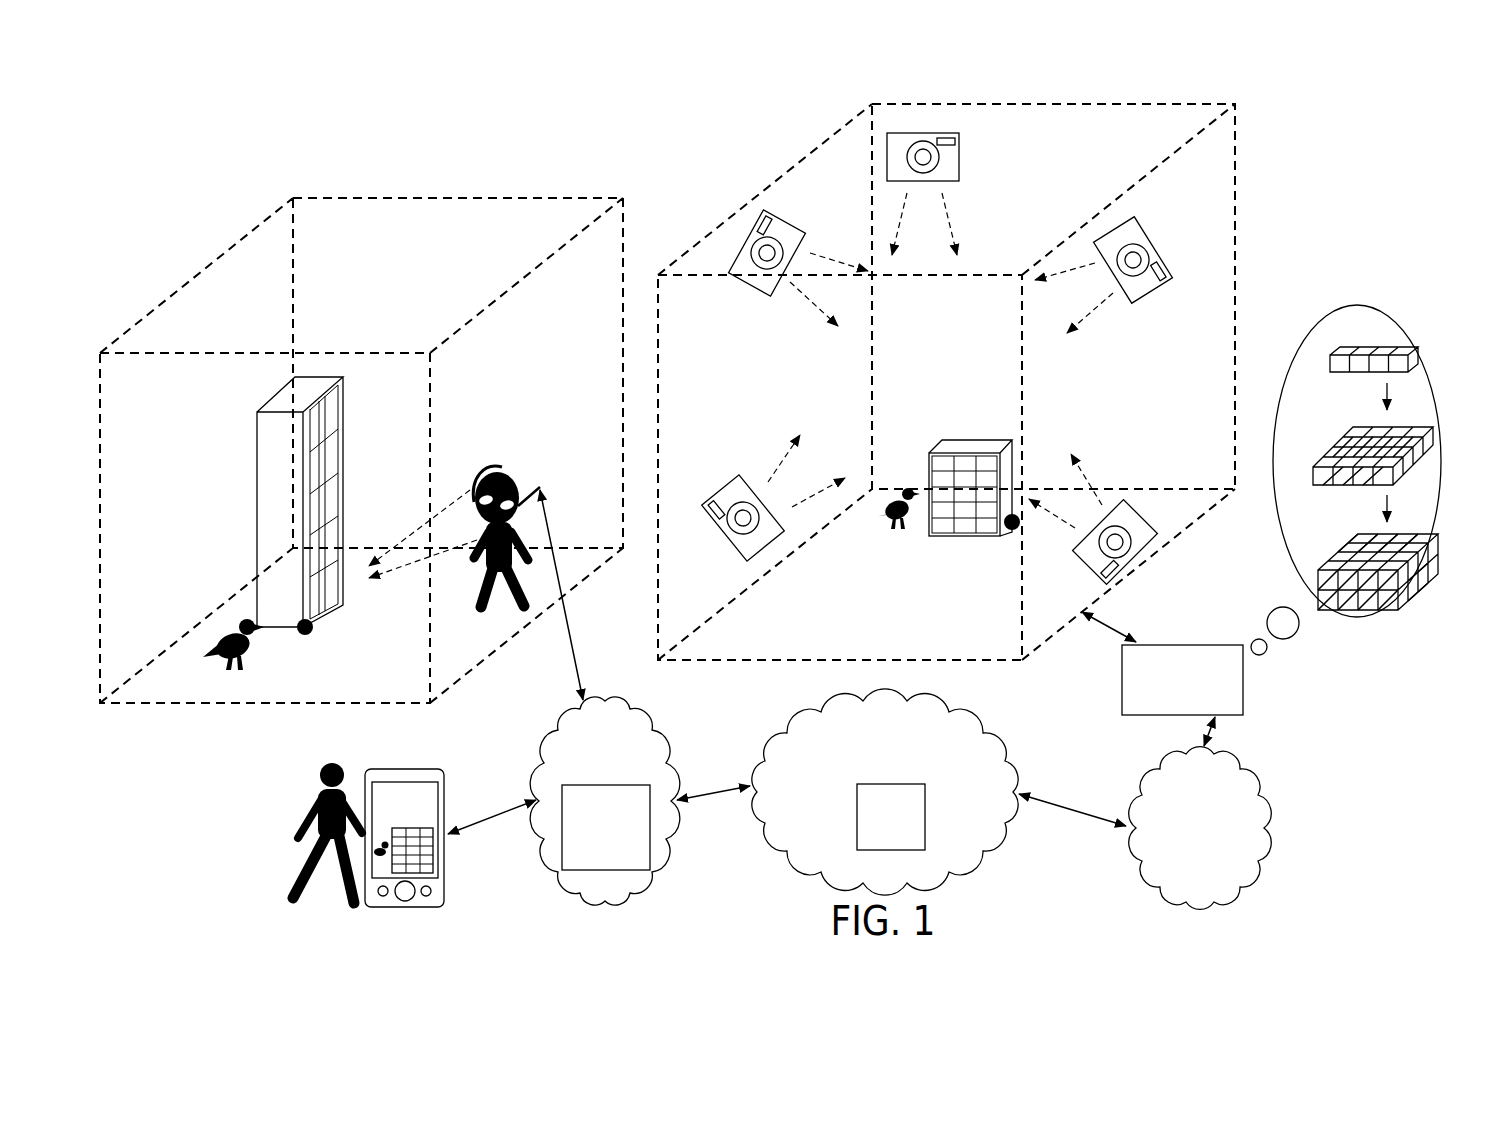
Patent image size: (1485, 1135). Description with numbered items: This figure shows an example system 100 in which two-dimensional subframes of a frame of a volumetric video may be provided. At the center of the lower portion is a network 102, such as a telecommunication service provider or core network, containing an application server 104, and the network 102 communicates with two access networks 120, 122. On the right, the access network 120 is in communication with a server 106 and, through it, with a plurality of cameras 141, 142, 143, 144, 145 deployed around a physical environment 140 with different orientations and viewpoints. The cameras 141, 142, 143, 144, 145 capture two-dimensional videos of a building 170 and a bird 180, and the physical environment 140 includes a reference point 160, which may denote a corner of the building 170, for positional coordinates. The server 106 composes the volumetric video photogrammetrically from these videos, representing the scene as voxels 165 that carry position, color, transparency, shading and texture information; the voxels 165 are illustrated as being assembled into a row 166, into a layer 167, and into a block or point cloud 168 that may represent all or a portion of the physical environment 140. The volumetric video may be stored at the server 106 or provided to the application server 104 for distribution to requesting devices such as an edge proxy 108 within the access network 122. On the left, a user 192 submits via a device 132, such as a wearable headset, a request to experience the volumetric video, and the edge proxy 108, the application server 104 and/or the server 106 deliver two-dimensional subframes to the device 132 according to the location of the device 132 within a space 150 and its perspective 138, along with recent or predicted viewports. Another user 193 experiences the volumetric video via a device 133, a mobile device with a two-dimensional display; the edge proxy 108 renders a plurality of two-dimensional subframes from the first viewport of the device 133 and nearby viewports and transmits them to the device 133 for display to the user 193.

The system 100 is at (166, 71).
The network 102 is at (870, 776).
The application server 104 is at (876, 842).
The server 106 is at (1167, 701).
The edge proxy 108 is at (591, 859).
The access network 120 is at (1185, 861).
The access network 122 is at (590, 775).
The device 132 is at (540, 487).
The device 133 is at (446, 858).
The perspective 138 is at (458, 492).
The physical environment 140 is at (1236, 283).
The camera 141 is at (1142, 562).
The camera 142 is at (780, 546).
The camera 143 is at (748, 228).
The camera 144 is at (887, 152).
The camera 145 is at (1152, 236).
The space 150 is at (556, 198).
The reference point 160 is at (311, 634).
The voxels 165 is at (1400, 345).
The row 166 is at (1340, 326).
The layer 167 is at (1303, 433).
The block or point cloud 168 is at (1310, 541).
The building 170 is at (323, 610).
The bird 180 is at (247, 668).
The user 192 is at (529, 610).
The user 193 is at (290, 896).